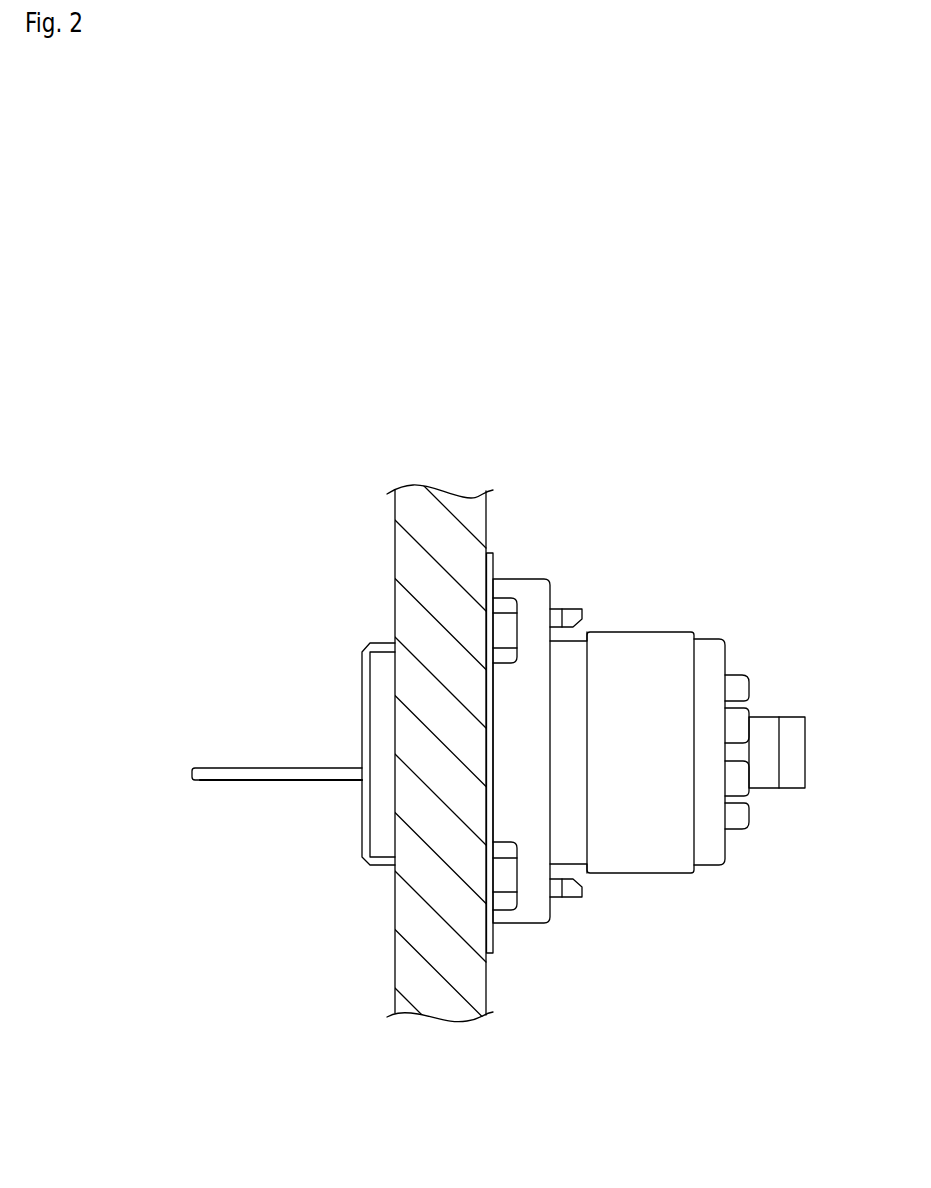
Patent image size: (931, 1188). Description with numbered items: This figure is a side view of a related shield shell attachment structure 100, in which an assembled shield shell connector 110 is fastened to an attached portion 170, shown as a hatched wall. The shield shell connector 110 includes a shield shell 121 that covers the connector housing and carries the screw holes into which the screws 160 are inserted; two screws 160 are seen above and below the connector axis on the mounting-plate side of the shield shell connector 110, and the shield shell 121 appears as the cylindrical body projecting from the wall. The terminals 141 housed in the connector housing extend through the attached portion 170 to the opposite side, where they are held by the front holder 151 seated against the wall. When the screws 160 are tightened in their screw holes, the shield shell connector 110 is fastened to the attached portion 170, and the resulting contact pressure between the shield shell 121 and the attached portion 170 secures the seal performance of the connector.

The shield shell attachment structure 100 is at (646, 726).
The shield shell connector 110 is at (678, 585).
The shield shell 121 is at (622, 620).
The terminals 141 is at (258, 760).
The front holder 151 is at (362, 638).
The screws 160 is at (503, 635).
The attached portion 170 is at (403, 955).